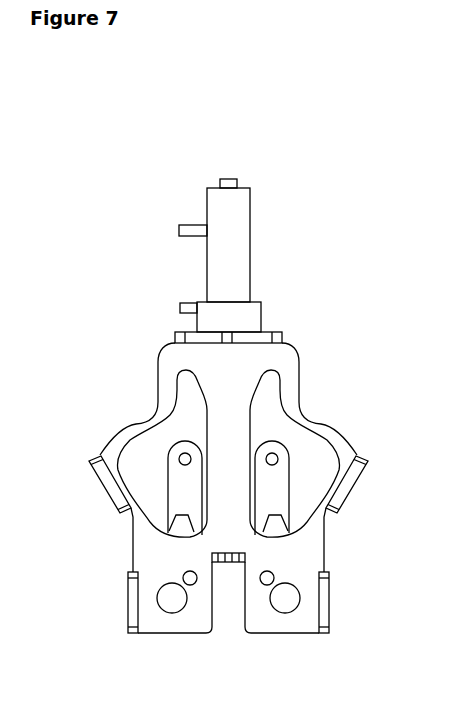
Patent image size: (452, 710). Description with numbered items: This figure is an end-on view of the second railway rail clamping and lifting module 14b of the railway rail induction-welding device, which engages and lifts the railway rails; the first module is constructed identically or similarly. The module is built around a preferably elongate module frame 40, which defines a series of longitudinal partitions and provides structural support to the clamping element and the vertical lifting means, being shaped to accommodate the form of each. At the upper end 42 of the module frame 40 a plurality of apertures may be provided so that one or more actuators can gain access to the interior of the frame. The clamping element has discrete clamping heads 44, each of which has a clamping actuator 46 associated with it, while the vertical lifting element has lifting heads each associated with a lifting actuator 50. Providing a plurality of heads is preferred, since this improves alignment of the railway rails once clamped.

The second railway rail clamping and lifting module 14b is at (118, 289).
The module frame 40 is at (122, 560).
The upper end 42 is at (270, 331).
The clamping head 44 is at (281, 443).
The clamping actuator 46 is at (237, 179).
The lifting actuator 50 is at (180, 223).